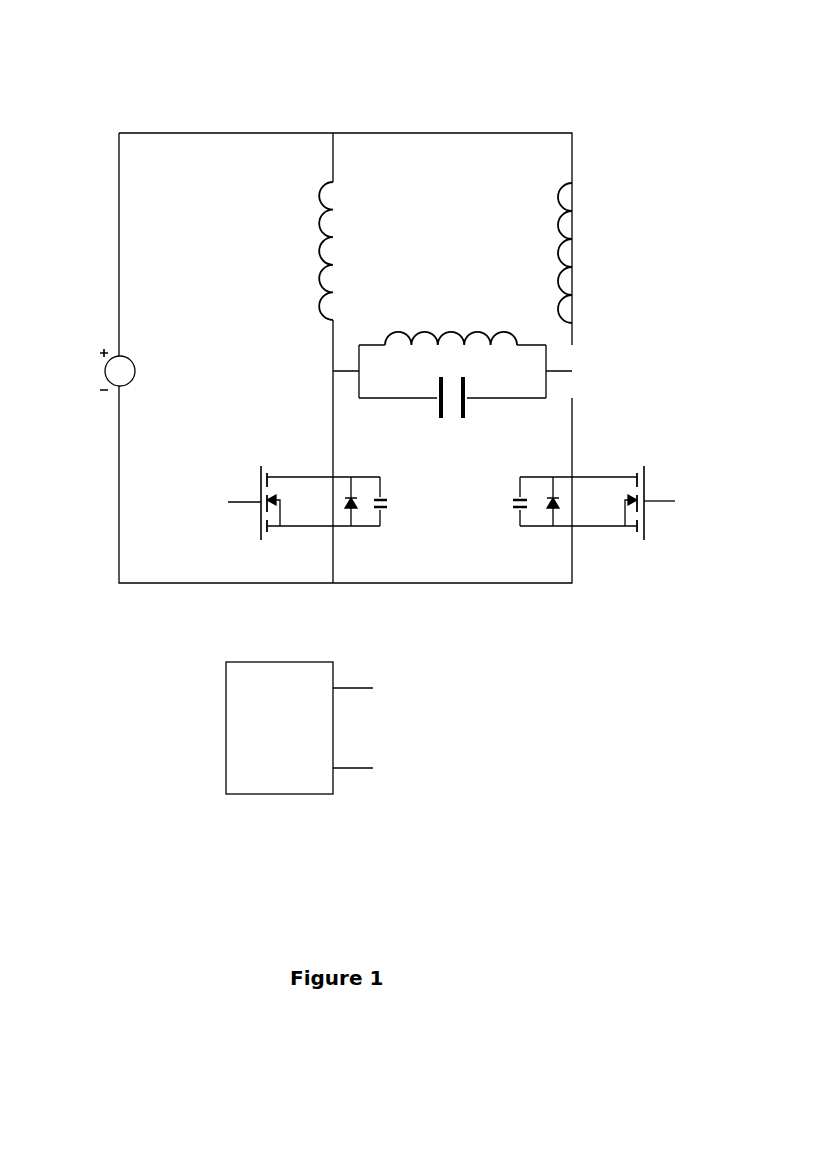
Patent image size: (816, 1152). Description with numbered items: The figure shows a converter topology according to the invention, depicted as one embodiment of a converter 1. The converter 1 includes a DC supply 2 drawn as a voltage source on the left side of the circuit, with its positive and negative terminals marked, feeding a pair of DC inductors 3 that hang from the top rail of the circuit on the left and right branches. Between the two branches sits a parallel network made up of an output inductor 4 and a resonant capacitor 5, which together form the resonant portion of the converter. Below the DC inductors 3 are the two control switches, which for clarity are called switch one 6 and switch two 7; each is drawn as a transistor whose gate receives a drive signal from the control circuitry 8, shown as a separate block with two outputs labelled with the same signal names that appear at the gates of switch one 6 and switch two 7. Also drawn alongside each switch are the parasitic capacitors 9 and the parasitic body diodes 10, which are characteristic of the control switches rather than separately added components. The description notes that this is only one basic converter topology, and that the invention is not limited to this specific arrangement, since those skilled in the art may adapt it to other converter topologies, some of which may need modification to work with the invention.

The converter 1 is at (650, 71).
The DC supply 2 is at (104, 366).
The DC inductors 3 is at (560, 210).
The output inductor 4 is at (456, 333).
The resonant capacitor 5 is at (465, 410).
The switch one 6 is at (261, 480).
The switch two 7 is at (644, 480).
The control circuitry 8 is at (333, 794).
The parasitic capacitors 9 is at (512, 508).
The parasitic body diodes 10 is at (373, 508).